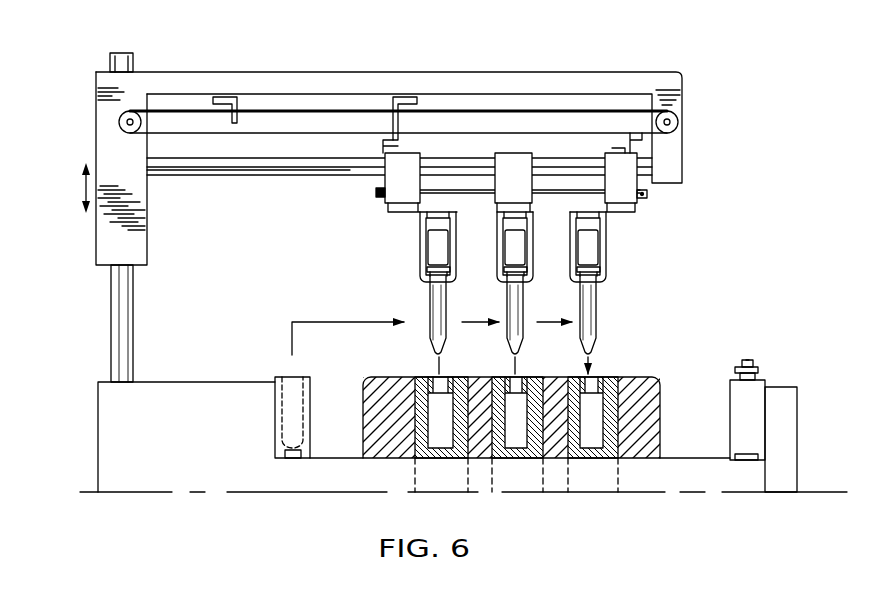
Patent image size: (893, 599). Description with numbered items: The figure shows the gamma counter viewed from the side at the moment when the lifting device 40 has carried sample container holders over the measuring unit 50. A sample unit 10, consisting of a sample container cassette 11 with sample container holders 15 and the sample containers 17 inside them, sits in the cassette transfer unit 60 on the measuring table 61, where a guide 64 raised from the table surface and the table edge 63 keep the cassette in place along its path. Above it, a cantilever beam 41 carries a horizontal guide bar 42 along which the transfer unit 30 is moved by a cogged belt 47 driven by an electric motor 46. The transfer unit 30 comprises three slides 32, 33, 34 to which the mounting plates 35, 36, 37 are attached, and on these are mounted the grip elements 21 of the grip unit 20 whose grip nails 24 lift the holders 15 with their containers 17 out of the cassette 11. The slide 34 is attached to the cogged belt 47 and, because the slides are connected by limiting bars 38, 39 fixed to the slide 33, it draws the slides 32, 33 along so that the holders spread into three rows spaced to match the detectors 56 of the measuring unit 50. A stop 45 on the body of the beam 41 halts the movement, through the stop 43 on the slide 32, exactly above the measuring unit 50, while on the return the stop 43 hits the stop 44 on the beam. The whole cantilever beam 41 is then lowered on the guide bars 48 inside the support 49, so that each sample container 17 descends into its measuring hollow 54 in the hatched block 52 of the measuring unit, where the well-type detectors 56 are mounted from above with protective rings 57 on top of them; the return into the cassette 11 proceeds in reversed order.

The sample unit 10 is at (742, 338).
The sample container cassette 11 is at (310, 402).
The sample container holder 15 is at (597, 317).
The sample container 17 is at (427, 270).
The grip unit 20 is at (613, 252).
The grip element 21 is at (428, 247).
The grip nails 24 is at (603, 275).
The transfer unit 30 is at (358, 191).
The slide 32 is at (353, 176).
The slide 33 is at (523, 160).
The slide 34 is at (630, 182).
The mounting plate 35 is at (388, 214).
The mounting plate 36 is at (533, 212).
The mounting plate 37 is at (632, 212).
The limiting bar 38 is at (478, 195).
The limiting bar 39 is at (560, 188).
The lifting device 40 is at (437, 59).
The cantilever beam 41 is at (277, 80).
The horizontal guide bar 42 is at (218, 176).
The stop 43 is at (383, 138).
The stop 44 is at (232, 97).
The stop 45 is at (394, 97).
The electric motor 46 is at (118, 126).
The cogged belt 47 is at (508, 110).
The guide bars 48 is at (111, 320).
The support 49 is at (95, 243).
The measuring unit 50 is at (664, 366).
The heating block body 52 is at (648, 410).
The measuring hollow 54 is at (512, 388).
The detector 56 is at (622, 458).
The protective ring 57 is at (607, 393).
The cassette transfer unit 60 is at (738, 477).
The measuring table 61 is at (700, 458).
The table edge 63 is at (275, 435).
The guide 64 is at (290, 458).